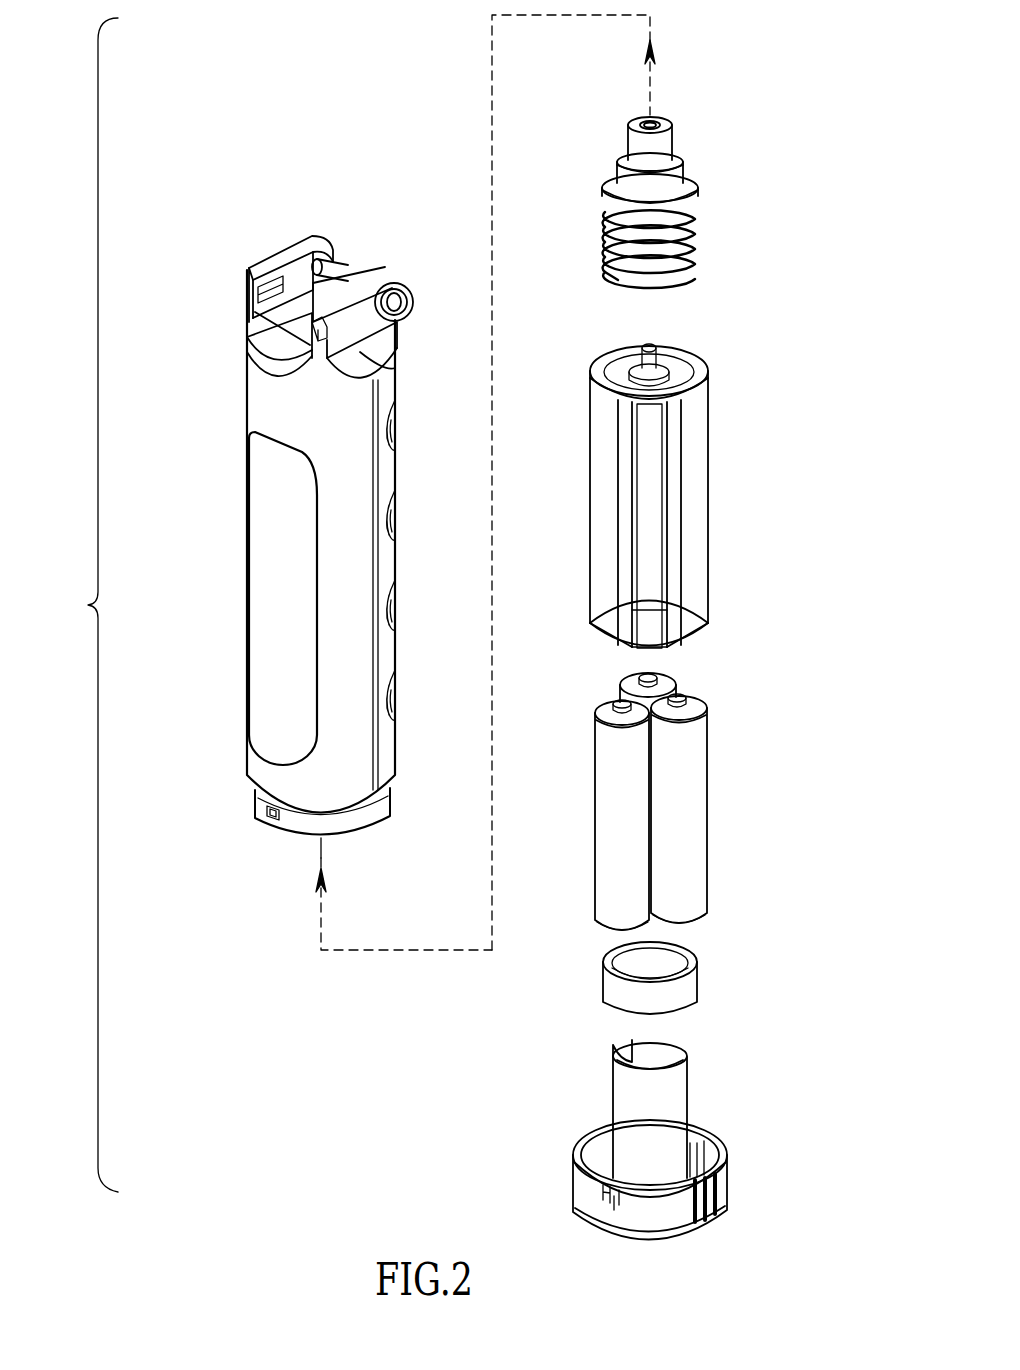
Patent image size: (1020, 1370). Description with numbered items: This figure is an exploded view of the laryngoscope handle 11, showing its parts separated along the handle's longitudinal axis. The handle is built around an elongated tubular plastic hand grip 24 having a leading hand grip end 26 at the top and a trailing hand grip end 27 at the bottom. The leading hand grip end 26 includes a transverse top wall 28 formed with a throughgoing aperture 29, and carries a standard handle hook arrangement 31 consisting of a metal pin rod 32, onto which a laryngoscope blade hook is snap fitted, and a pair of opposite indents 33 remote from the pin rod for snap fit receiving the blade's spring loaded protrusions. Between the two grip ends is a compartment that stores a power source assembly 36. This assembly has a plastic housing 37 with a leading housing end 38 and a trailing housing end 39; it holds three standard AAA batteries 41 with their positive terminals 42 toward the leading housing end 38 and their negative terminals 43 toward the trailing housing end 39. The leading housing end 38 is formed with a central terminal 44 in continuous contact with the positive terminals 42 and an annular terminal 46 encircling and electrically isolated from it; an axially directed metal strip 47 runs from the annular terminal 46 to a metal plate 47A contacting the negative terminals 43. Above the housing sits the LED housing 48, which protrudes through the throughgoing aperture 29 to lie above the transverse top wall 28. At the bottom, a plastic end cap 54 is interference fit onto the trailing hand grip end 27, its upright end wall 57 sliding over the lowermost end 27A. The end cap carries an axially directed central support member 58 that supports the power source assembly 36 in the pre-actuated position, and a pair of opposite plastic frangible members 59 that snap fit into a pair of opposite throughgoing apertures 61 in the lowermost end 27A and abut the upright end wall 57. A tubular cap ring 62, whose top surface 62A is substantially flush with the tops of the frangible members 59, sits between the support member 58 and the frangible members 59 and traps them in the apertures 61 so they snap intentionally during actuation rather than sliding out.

The laryngoscope handle 11 is at (79, 605).
The hand grip 24 is at (358, 563).
The leading hand grip end 26 is at (205, 160).
The trailing hand grip end 27 is at (205, 853).
The lowermost end 27A is at (298, 832).
The transverse top wall 28 is at (262, 318).
The throughgoing aperture 29 is at (312, 343).
The handle hook arrangement 31 is at (392, 140).
The metal pin rod 32 is at (355, 266).
The indents 33 is at (250, 272).
The power source assembly 36 is at (760, 341).
The plastic housing 37 is at (700, 470).
The leading housing end 38 is at (730, 296).
The trailing housing end 39 is at (737, 603).
The AAA batteries 41 is at (695, 785).
The positive terminals 42 is at (682, 700).
The negative terminals 43 is at (692, 918).
The central terminal 44 is at (646, 346).
The annular terminal 46 is at (618, 372).
The metal strip 47 is at (650, 556).
The metal plate 47A is at (612, 650).
The LED housing 48 is at (716, 110).
The plastic end cap 54 is at (768, 1068).
The upright end wall 57 is at (676, 1222).
The central support member 58 is at (624, 1096).
The frangible members 59 is at (698, 1150).
The throughgoing apertures 61 is at (268, 812).
The cap ring 62 is at (692, 984).
The top surface 62A is at (615, 946).